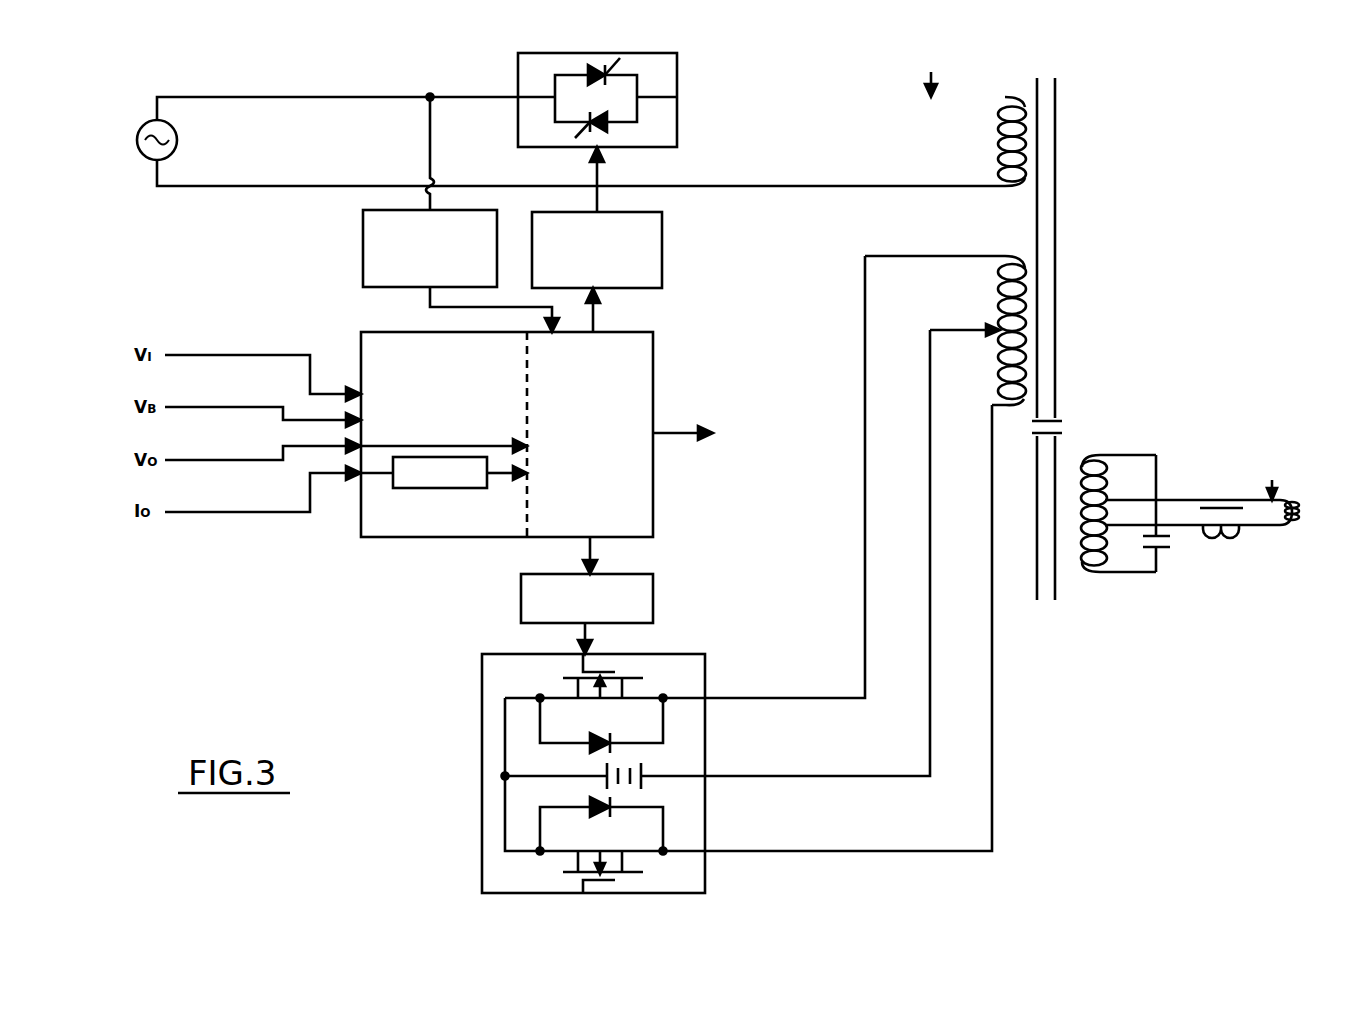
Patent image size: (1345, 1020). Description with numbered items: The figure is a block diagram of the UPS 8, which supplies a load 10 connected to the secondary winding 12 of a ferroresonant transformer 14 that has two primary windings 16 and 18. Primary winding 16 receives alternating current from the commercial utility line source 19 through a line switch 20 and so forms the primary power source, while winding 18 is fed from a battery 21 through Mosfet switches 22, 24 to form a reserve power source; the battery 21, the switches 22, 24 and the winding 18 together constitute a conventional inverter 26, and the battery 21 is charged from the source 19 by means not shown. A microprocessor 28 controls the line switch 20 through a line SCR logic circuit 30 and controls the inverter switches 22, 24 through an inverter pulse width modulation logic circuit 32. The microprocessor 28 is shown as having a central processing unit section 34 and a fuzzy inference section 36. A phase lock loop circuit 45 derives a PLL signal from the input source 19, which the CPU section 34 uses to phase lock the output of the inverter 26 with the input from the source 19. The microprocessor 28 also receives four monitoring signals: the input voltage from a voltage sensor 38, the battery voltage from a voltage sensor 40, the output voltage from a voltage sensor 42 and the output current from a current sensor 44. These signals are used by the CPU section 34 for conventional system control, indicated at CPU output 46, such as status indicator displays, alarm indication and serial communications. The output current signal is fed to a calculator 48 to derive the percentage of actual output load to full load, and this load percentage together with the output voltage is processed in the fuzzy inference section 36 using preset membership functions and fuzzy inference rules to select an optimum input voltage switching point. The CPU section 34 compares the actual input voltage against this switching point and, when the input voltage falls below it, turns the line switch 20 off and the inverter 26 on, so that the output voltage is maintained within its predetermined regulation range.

The UPS 8 is at (730, 474).
The load 10 is at (1217, 516).
The secondary winding 12 is at (1112, 455).
The ferroresonant transformer 14 is at (1136, 177).
The primary winding 16 is at (998, 130).
The primary winding 18 is at (1030, 277).
The commercial utility line source 19 is at (178, 137).
The line switch 20 is at (517, 60).
The battery 21 is at (645, 766).
The Mosfet switch 22 is at (645, 679).
The Mosfet switch 24 is at (645, 878).
The inverter 26 is at (640, 763).
The microprocessor 28 is at (515, 448).
The line SCR logic circuit 30 is at (664, 250).
The inverter pulse width modulation logic circuit 32 is at (520, 598).
The central processing unit section 34 is at (648, 520).
The fuzzy inference section 36 is at (368, 534).
The voltage sensor 38 is at (919, 74).
The voltage sensor 40 is at (976, 317).
The voltage sensor 42 is at (1275, 488).
The current sensor 44 is at (1240, 535).
The phase lock loop circuit 45 is at (362, 242).
The CPU output 46 is at (676, 430).
The calculator 48 is at (437, 489).